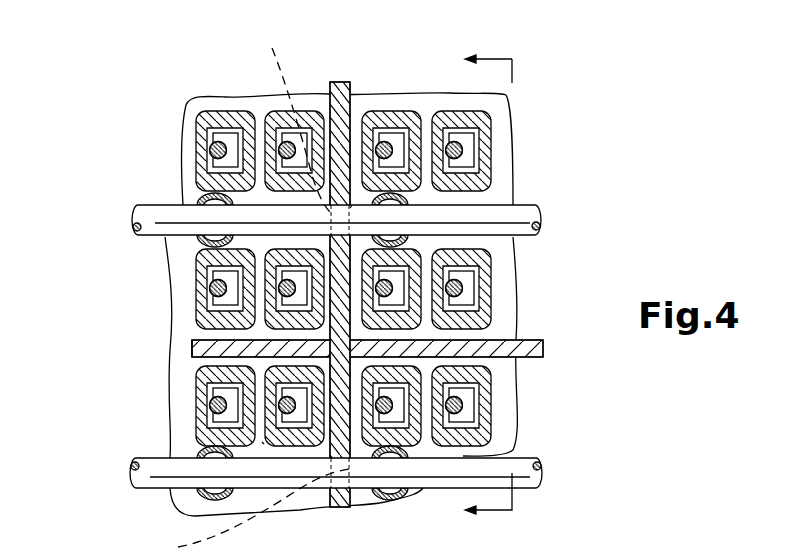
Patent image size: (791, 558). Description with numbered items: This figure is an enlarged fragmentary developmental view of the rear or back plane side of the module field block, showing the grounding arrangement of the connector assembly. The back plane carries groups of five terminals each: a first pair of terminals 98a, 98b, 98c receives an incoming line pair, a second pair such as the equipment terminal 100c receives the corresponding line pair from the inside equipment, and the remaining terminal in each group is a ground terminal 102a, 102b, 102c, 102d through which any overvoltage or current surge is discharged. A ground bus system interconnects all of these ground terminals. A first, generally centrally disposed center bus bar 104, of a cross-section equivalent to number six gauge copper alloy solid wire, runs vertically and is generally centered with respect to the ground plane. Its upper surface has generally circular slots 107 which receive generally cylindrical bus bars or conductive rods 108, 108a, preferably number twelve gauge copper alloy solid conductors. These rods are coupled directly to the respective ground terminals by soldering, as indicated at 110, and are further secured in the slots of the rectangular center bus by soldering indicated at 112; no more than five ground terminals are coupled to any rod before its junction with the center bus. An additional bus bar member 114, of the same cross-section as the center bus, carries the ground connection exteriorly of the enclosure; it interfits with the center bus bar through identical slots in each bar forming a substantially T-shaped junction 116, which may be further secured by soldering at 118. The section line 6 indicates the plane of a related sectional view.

The section line 6- 6 is at (480, 286).
The line terminal 98a is at (465, 147).
The line terminal 98b is at (460, 410).
The line terminal 98c is at (264, 135).
The equipment terminal 100c is at (213, 150).
The ground terminal 102a is at (525, 243).
The ground terminal 102b is at (390, 457).
The ground terminal 102c is at (200, 200).
The ground terminal 102d is at (197, 448).
The center bus bar 104 is at (338, 82).
The circular slot 107 is at (242, 293).
The conductive rod 108 is at (528, 217).
The conductive rod 108a is at (523, 476).
The solder connection 110 is at (166, 257).
The solder connection 112 is at (352, 205).
The additional bus bar member 114 is at (530, 348).
The T-shaped junction 116 is at (200, 357).
The solder connection 118 is at (546, 340).